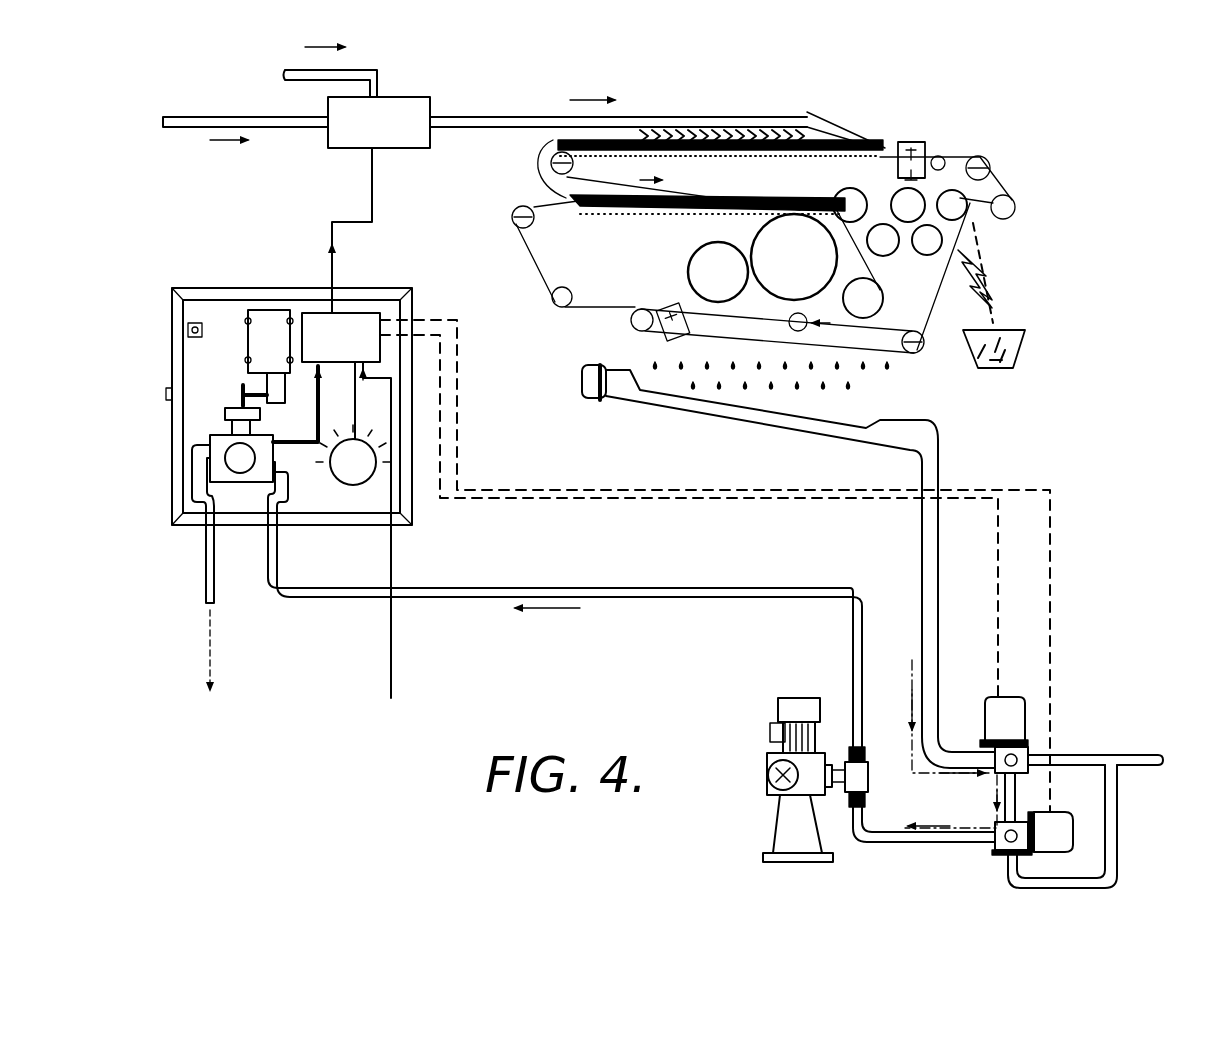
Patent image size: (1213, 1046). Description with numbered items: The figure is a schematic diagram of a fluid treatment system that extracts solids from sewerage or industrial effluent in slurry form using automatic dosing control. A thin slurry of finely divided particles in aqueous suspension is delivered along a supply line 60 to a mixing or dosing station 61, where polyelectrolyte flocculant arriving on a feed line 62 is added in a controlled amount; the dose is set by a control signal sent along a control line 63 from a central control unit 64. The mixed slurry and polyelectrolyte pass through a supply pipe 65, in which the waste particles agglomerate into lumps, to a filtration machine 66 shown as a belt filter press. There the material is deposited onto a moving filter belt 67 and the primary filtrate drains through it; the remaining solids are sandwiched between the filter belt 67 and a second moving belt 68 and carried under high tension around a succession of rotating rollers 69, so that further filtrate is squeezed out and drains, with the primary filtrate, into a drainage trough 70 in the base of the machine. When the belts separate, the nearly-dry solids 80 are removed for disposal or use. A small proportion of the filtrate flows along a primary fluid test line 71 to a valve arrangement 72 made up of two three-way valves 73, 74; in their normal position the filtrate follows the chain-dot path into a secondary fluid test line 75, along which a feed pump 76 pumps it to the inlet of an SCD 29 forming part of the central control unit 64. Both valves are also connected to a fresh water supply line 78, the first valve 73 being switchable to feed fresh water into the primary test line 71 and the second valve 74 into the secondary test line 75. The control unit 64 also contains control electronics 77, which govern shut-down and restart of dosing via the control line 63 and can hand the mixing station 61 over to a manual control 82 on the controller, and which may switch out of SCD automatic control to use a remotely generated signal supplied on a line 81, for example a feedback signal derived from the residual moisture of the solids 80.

The SCD 29 is at (203, 420).
The supply line 60 is at (208, 116).
The mixing or dosing station 61 is at (418, 97).
The feed line 62 is at (360, 62).
The control line 63 is at (341, 222).
The central control unit 64 is at (205, 282).
The supply pipe 65 is at (688, 116).
The filtration machine 66 is at (1020, 162).
The filter belt 67 is at (932, 150).
The moving belt 68 is at (523, 207).
The rotating rollers 69 is at (705, 265).
The drainage trough 70 is at (748, 420).
The primary fluid test line 71 is at (936, 562).
The valve arrangement 72 is at (1065, 705).
The first three-way valve 73 is at (1020, 762).
The second three-way valve 74 is at (1005, 855).
The secondary fluid test line 75 is at (693, 588).
The feed pump 76 is at (793, 698).
The control electronics 77 is at (362, 320).
The fresh water supply line 78 is at (1152, 772).
The nearly-dry solids 80 is at (1020, 312).
The line 81 is at (391, 668).
The manual control 82 is at (390, 463).